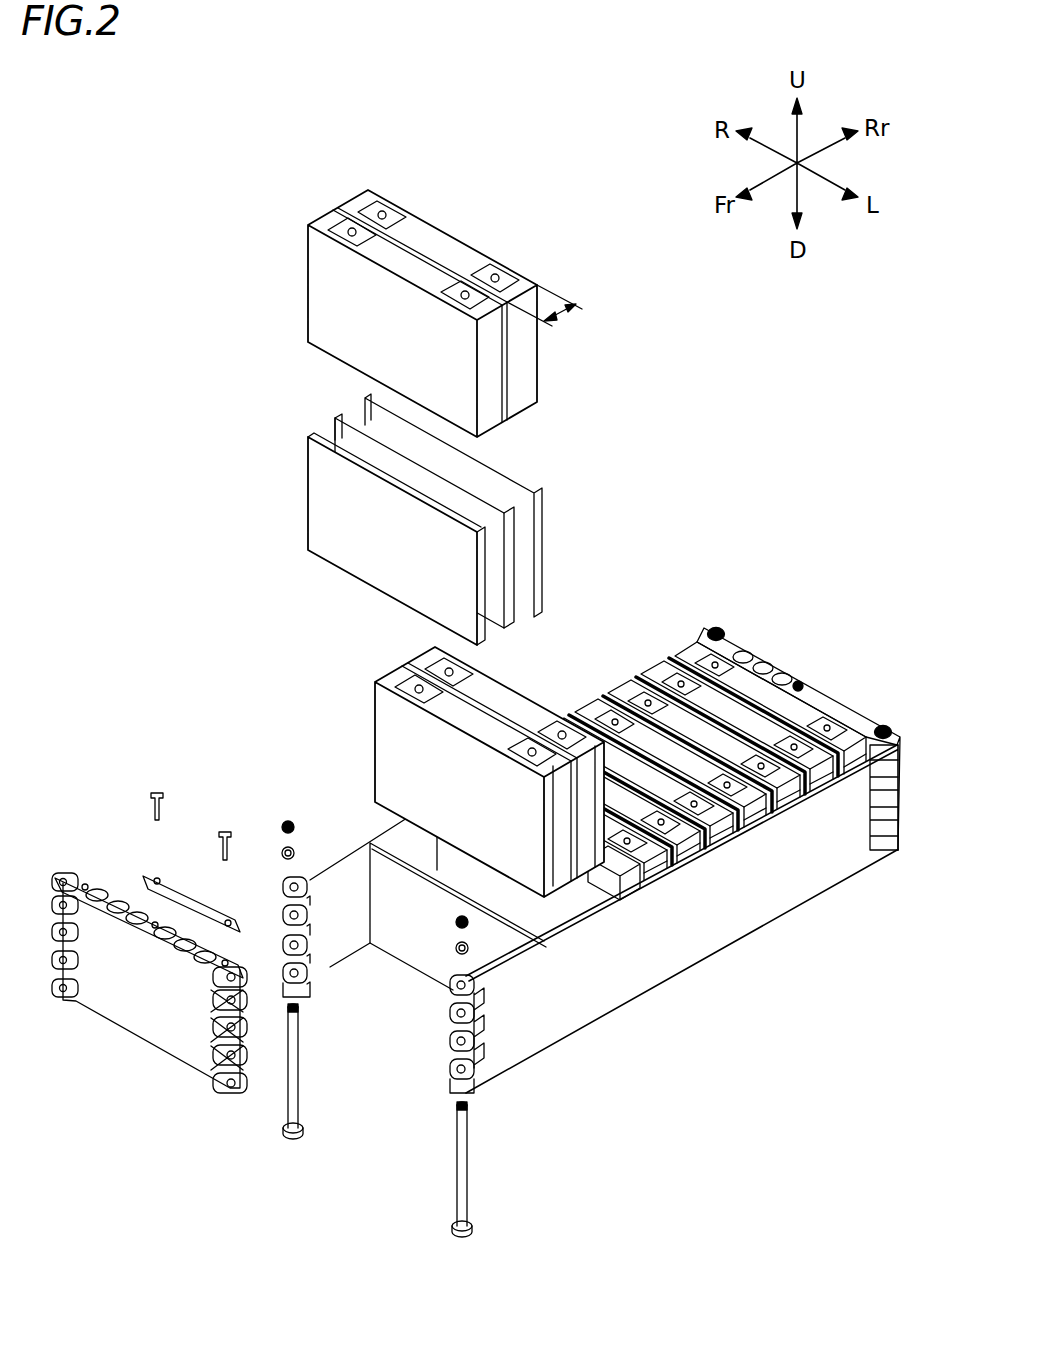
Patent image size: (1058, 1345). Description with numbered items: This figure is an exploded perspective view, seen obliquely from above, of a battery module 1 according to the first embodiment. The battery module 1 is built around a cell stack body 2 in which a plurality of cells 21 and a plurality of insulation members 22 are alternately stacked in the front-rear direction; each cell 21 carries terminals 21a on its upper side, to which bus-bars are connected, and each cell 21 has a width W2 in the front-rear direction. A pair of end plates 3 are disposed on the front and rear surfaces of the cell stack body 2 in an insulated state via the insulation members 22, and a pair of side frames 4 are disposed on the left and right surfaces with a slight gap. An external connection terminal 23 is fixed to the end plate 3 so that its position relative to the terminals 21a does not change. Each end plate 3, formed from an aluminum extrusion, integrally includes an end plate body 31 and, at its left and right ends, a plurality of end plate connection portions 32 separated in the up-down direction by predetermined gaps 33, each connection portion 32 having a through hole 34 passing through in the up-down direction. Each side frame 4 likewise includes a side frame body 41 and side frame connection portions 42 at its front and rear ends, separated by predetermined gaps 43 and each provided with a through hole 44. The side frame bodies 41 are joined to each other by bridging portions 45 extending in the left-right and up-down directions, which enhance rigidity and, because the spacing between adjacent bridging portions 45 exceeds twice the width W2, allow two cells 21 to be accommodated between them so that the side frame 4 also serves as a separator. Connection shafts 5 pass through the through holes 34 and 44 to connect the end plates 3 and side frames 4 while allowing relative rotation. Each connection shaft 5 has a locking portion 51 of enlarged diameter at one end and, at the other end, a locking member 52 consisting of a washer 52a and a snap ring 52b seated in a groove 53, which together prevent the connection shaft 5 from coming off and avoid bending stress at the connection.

The battery module 1 is at (855, 556).
The cell stack body 2 is at (681, 720).
The end plate 3 is at (461, 871).
The end plate body 31 is at (461, 871).
The side frame 4 is at (585, 907).
The side frame body 41 is at (678, 953).
The connection shaft 5 is at (581, 926).
The cell 21 is at (360, 192).
The terminal 21a is at (494, 266).
The insulation member 22 is at (365, 405).
The external connection terminal 23 is at (176, 870).
The end plate connection portion 32 is at (55, 988).
The gap 33 is at (128, 1015).
The through hole 34 is at (62, 872).
The side frame connection portion 42 is at (283, 980).
The gap 43 is at (484, 1050).
The through hole 44 is at (430, 930).
The bridging portion 45 is at (412, 945).
The locking portion 51 is at (292, 1135).
The locking member 52 is at (502, 892).
The washer 52a is at (285, 848).
The snap ring 52b is at (290, 820).
The groove 53 is at (300, 1010).
The width W2 is at (575, 325).